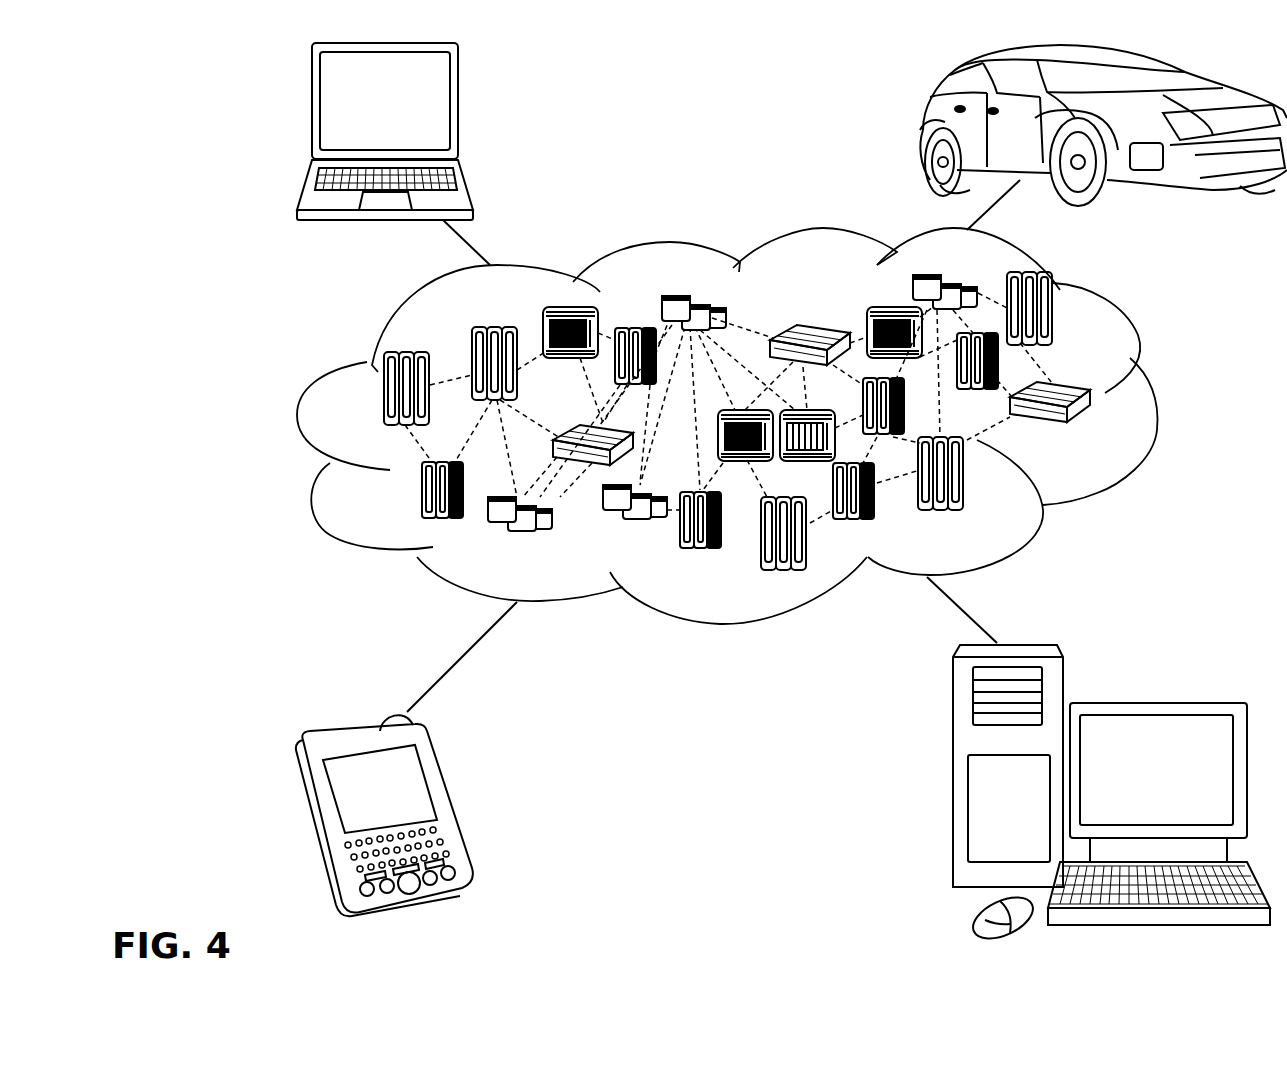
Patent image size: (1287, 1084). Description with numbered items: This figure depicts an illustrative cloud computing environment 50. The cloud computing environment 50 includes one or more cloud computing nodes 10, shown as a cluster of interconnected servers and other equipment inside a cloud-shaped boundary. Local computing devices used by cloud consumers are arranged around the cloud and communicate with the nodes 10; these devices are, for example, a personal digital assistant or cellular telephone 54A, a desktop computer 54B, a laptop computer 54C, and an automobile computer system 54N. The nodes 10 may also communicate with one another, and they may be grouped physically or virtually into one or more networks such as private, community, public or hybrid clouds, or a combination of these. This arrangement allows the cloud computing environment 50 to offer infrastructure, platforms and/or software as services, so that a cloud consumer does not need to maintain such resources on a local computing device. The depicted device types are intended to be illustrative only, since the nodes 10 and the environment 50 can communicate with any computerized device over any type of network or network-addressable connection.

The cloud computing node 10 is at (1100, 433).
The cloud computing environment 50 is at (757, 426).
The personal digital assistant or cellular telephone 54A is at (447, 803).
The desktop computer 54B is at (1153, 702).
The laptop computer 54C is at (460, 110).
The automobile computer system 54N is at (922, 127).